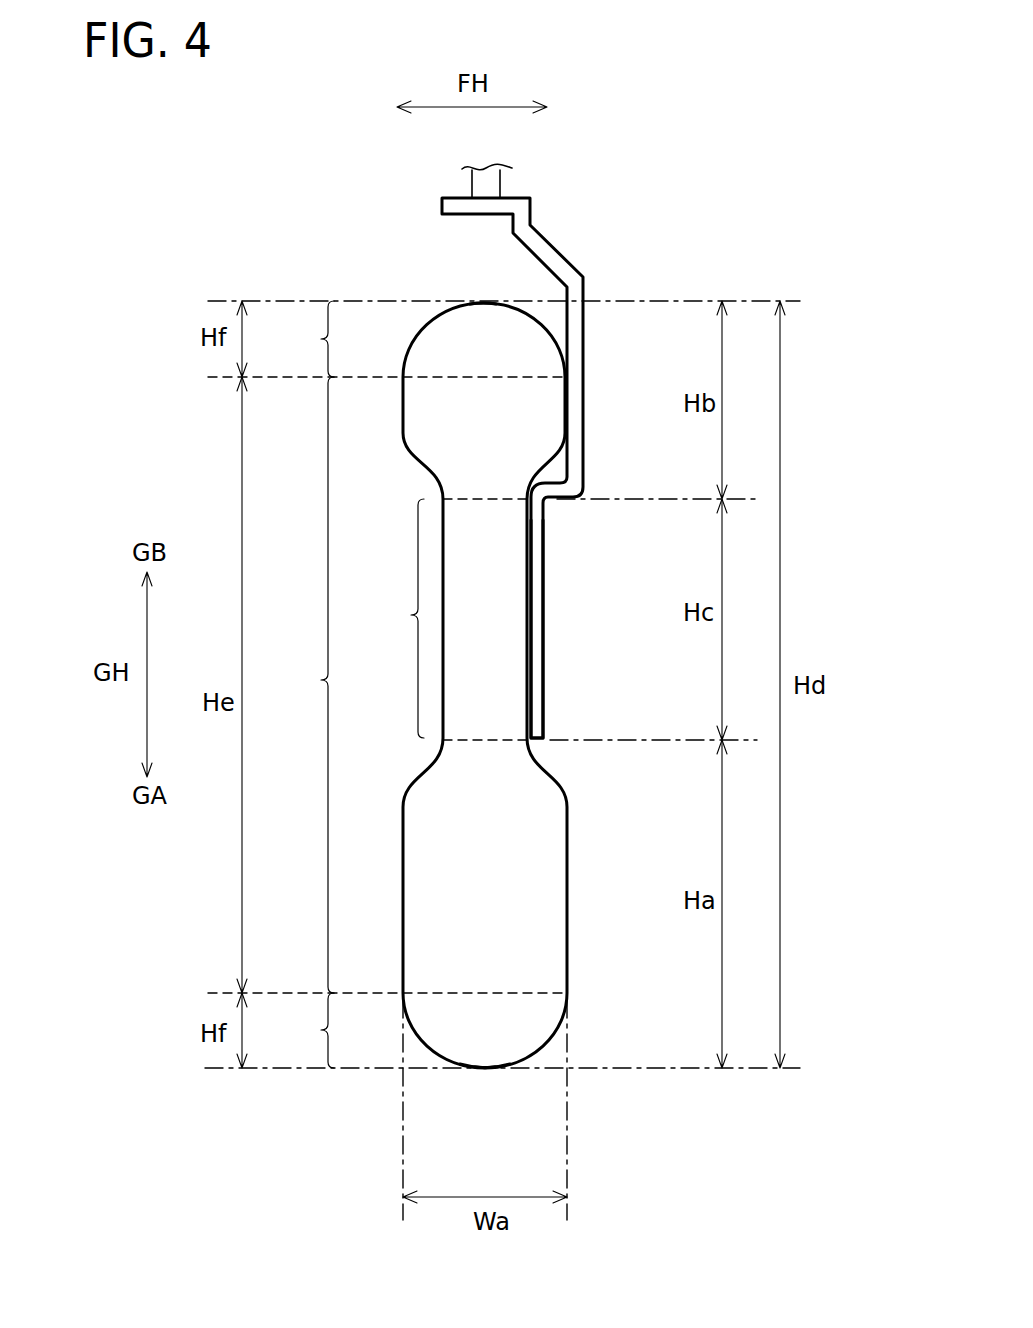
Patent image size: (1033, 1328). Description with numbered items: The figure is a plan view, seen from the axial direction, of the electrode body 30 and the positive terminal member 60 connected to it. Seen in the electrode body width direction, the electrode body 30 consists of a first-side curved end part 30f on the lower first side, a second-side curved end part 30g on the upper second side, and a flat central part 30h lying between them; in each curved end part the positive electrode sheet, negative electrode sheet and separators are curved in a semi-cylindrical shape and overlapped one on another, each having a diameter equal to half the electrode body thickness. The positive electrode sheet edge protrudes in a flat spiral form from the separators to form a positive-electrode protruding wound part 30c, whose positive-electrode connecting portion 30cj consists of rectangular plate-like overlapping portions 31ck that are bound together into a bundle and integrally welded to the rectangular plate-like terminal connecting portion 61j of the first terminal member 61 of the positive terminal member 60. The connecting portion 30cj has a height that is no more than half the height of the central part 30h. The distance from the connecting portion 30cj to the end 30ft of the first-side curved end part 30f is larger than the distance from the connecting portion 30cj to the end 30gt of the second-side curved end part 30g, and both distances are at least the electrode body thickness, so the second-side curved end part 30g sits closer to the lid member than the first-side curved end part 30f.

The electrode body 30 is at (440, 316).
The end of second-side curved end part 30gt is at (483, 300).
The second-side curved end part 30g is at (303, 339).
The central part 30h is at (304, 685).
The first-side curved end part 30f is at (303, 1030).
The positive-electrode connecting portion 30cj is at (383, 618).
The overlapping portions 31ck is at (383, 618).
The positive-electrode protruding wound part 30c is at (482, 957).
The end of first-side curved end part 30ft is at (487, 1068).
The positive terminal member 60 is at (567, 451).
The first terminal member 61 is at (539, 451).
The terminal connecting portion 61j is at (534, 577).